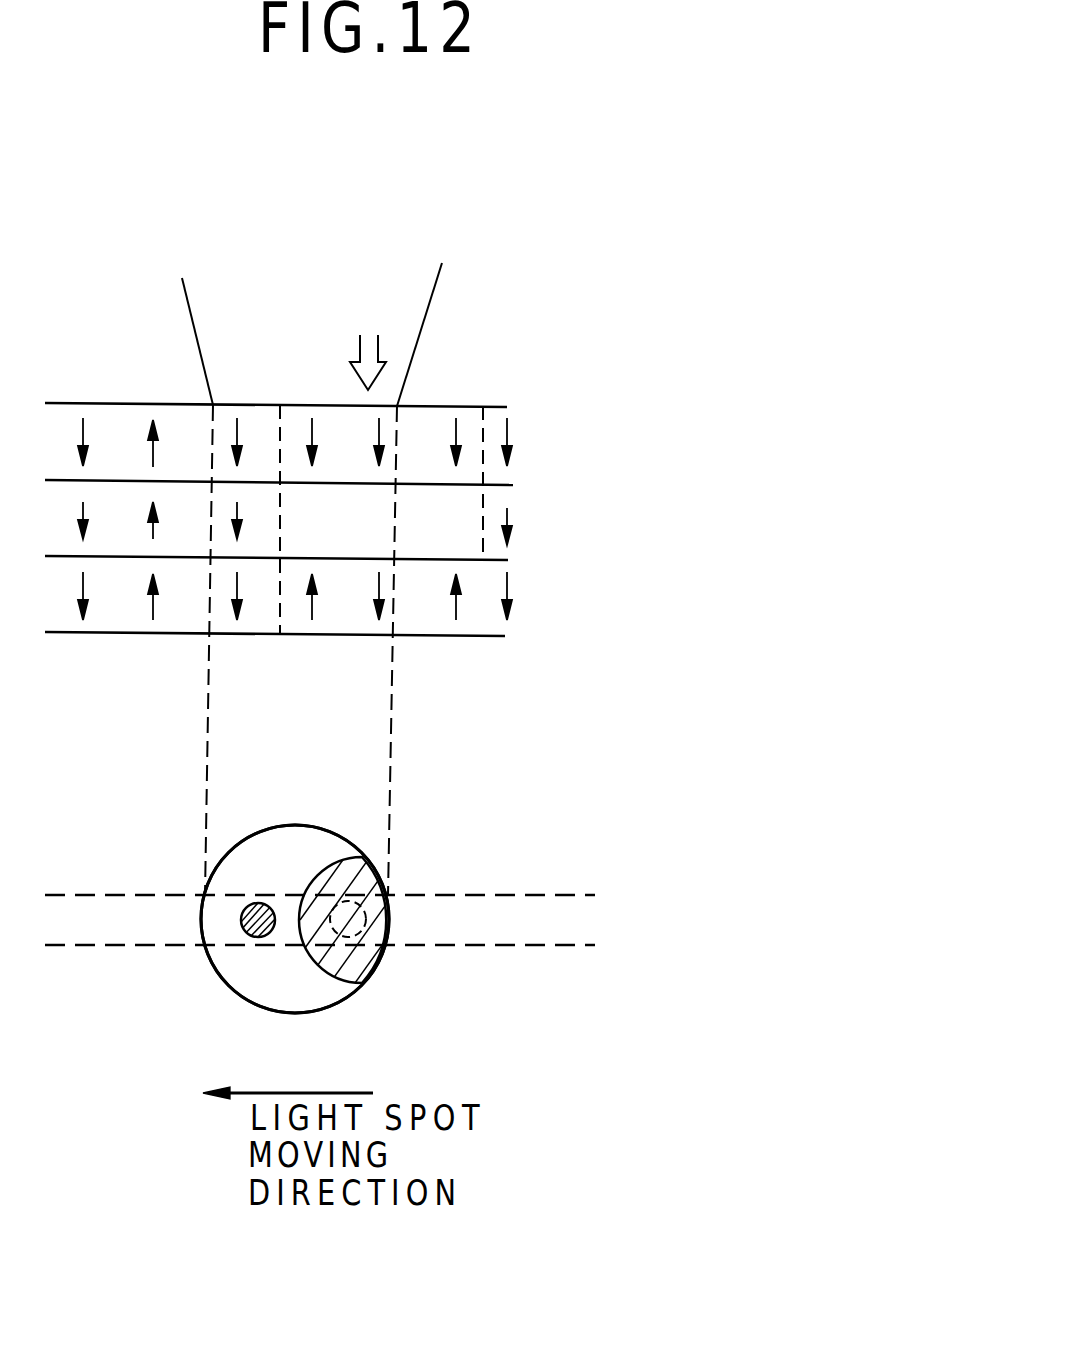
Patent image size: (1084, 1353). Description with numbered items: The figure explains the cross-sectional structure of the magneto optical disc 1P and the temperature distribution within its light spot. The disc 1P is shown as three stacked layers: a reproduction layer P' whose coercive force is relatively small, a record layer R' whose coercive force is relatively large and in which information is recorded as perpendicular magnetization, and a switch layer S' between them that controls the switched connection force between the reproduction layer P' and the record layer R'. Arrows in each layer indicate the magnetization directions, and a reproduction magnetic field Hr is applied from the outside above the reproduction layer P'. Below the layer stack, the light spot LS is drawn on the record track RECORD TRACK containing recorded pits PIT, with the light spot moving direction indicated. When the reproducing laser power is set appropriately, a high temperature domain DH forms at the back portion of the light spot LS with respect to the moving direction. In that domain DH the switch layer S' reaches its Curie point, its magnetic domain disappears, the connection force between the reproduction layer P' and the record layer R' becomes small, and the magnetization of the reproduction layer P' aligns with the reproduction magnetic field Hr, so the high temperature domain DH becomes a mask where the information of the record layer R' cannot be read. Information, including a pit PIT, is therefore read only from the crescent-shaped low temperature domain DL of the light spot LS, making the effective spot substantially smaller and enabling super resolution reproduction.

The magneto optical disc 1P is at (108, 412).
The reproduction magnetic field Hr is at (351, 353).
The reproduction layer P' is at (323, 448).
The switch layer S' is at (323, 525).
The record layer R' is at (323, 602).
The light spot LS is at (263, 862).
The pit PIT is at (240, 914).
The high temperature domain DH is at (377, 963).
The low temperature domain DL is at (328, 1009).
The record track RECORD TRACK is at (607, 877).